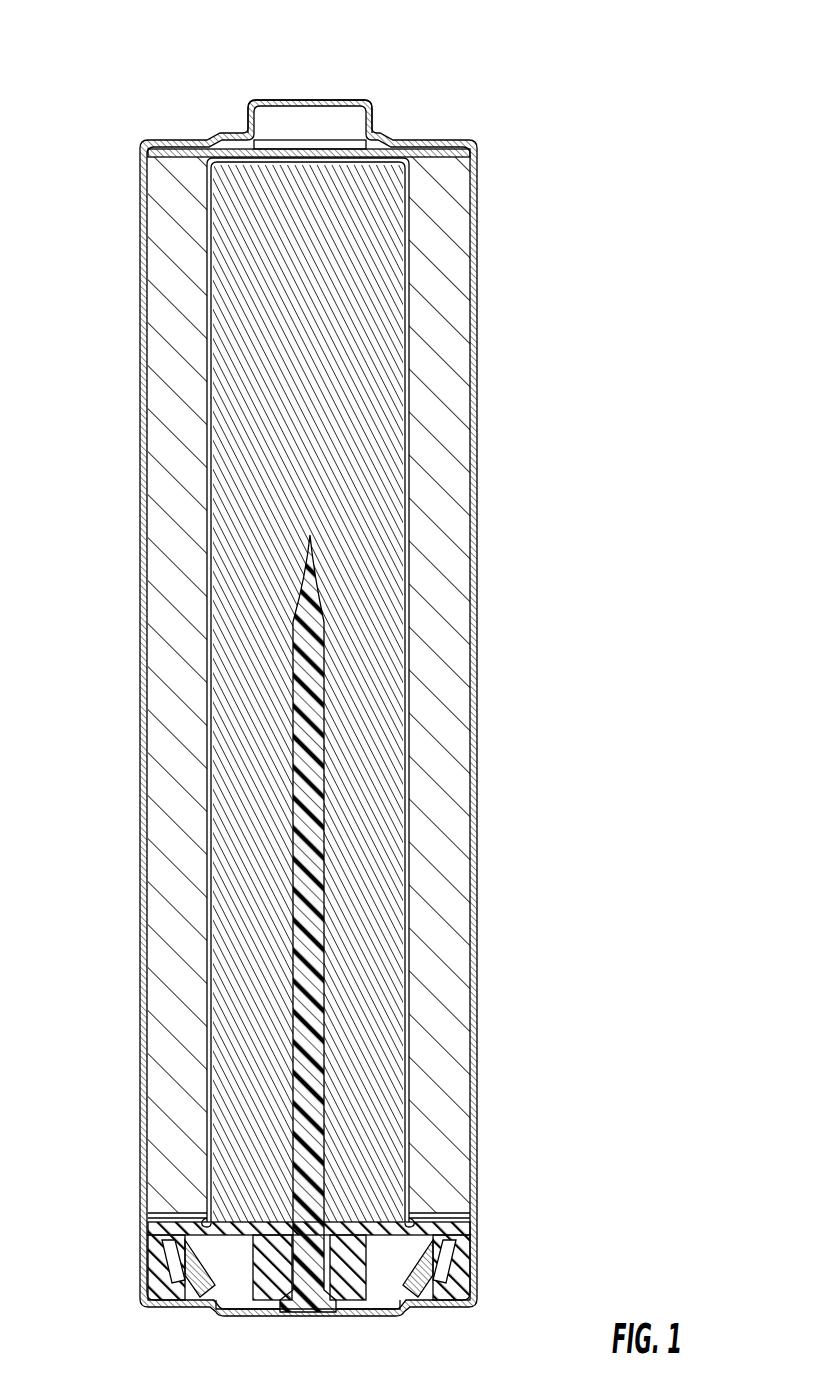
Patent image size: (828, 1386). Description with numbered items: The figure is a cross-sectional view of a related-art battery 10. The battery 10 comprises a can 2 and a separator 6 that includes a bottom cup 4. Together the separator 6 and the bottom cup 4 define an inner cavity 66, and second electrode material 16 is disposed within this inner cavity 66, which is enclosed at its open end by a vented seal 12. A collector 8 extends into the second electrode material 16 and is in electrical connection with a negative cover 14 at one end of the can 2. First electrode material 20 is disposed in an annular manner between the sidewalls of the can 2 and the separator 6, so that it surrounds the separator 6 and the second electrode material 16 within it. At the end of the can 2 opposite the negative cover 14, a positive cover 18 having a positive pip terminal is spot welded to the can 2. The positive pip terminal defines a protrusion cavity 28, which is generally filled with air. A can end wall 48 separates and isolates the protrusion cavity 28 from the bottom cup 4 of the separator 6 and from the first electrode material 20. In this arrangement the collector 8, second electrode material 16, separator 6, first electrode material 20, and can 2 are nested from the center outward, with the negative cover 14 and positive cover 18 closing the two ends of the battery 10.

The battery 10 is at (90, 76).
The can 2 is at (141, 985).
The bottom cup 4 is at (343, 152).
The separator 6 is at (412, 275).
The collector 8 is at (300, 1135).
The vented seal 12 is at (253, 1238).
The negative cover 14 is at (297, 1315).
The second electrode material 16 is at (233, 901).
The positive cover 18 is at (310, 99).
The first electrode material 20 is at (176, 690).
The protrusion cavity 28 is at (293, 118).
The can end wall 48 is at (273, 149).
The inner cavity 66 is at (228, 1148).